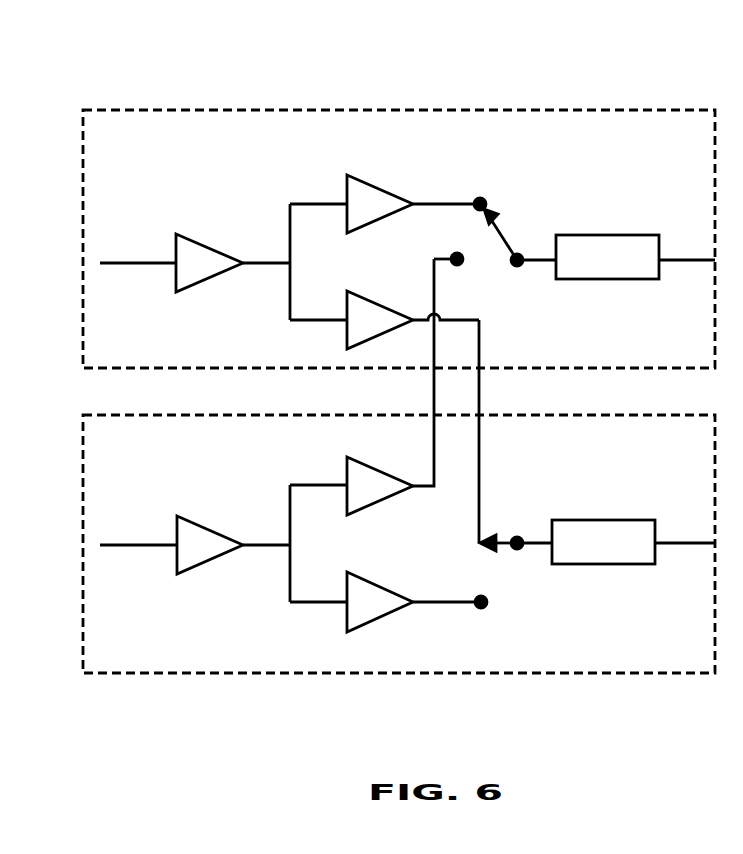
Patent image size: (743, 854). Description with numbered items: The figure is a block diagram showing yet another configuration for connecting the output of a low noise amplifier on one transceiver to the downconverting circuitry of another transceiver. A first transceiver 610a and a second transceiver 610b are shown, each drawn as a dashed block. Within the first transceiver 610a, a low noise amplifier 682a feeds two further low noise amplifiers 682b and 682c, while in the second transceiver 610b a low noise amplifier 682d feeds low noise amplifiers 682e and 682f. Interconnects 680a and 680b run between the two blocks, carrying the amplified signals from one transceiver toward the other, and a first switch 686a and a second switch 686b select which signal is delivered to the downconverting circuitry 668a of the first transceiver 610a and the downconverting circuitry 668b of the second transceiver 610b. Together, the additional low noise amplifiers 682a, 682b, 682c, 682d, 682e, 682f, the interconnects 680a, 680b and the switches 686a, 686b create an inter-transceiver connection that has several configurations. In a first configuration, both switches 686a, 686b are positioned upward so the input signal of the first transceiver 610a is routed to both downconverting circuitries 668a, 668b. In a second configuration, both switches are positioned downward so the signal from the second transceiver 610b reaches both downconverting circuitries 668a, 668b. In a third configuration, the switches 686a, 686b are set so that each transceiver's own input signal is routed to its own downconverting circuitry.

The first transceiver 610a is at (643, 110).
The second transceiver 610b is at (643, 673).
The low noise amplifier 682a is at (205, 247).
The low noise amplifier 682b is at (347, 190).
The low noise amplifier 682c is at (357, 297).
The low noise amplifier 682d is at (205, 528).
The low noise amplifier 682e is at (347, 470).
The low noise amplifier 682f is at (377, 585).
The first switch 686a is at (507, 240).
The second switch 686b is at (508, 539).
The downconverting circuitry 668a is at (616, 257).
The downconverting circuitry 668b is at (616, 542).
The interconnect 680a is at (434, 392).
The interconnect 680b is at (479, 397).